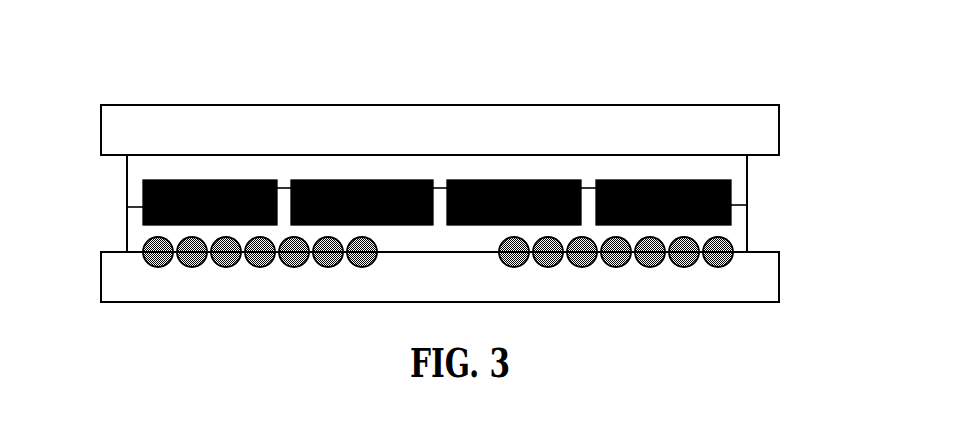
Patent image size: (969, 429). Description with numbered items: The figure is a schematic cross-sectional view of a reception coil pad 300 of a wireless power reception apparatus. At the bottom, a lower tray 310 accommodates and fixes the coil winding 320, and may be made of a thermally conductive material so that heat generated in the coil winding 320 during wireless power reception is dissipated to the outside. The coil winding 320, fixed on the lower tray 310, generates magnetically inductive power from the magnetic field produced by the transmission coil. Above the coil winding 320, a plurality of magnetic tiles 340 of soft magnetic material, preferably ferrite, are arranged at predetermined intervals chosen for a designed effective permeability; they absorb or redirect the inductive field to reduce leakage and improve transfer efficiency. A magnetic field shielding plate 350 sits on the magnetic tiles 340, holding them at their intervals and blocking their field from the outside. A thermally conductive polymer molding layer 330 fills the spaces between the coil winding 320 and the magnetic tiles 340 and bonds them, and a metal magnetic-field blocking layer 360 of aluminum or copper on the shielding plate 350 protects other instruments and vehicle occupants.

The reception coil pad 300 is at (447, 26).
The lower tray 310 is at (779, 278).
The coil winding 320 is at (145, 238).
The thermally conductive polymer molding layer 330 is at (747, 223).
The magnetic tiles 340 is at (144, 180).
The magnetic field shielding plate 350 is at (747, 187).
The metal magnetic-field blocking layer 360 is at (779, 112).